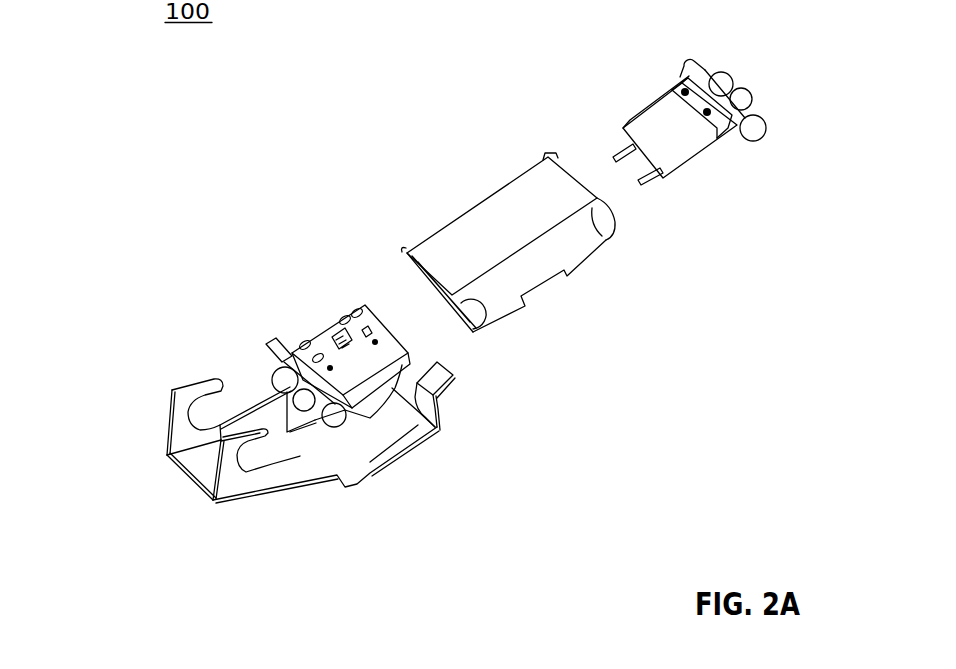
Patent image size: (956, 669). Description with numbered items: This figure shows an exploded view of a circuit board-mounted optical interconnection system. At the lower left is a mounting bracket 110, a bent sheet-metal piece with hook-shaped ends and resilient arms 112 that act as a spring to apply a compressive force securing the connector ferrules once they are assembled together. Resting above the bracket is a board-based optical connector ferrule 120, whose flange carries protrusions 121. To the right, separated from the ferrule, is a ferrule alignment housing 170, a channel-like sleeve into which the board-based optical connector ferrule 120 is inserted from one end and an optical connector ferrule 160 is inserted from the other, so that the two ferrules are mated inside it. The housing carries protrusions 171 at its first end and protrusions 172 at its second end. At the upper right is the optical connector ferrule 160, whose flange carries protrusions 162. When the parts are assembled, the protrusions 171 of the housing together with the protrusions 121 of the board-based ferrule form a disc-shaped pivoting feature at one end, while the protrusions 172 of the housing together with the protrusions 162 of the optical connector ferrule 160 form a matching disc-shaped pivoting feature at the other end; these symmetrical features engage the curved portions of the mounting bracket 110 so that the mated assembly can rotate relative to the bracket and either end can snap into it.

The mounting bracket 110 is at (243, 400).
The resilient arms 112 is at (460, 452).
The board-based optical connector ferrule 120 is at (314, 315).
The protrusions 121 is at (363, 475).
The optical connector ferrule 160 is at (635, 95).
The protrusions 162 is at (762, 170).
The ferrule alignment housing 170 is at (491, 215).
The protrusions 171 is at (504, 376).
The protrusions 172 is at (633, 282).